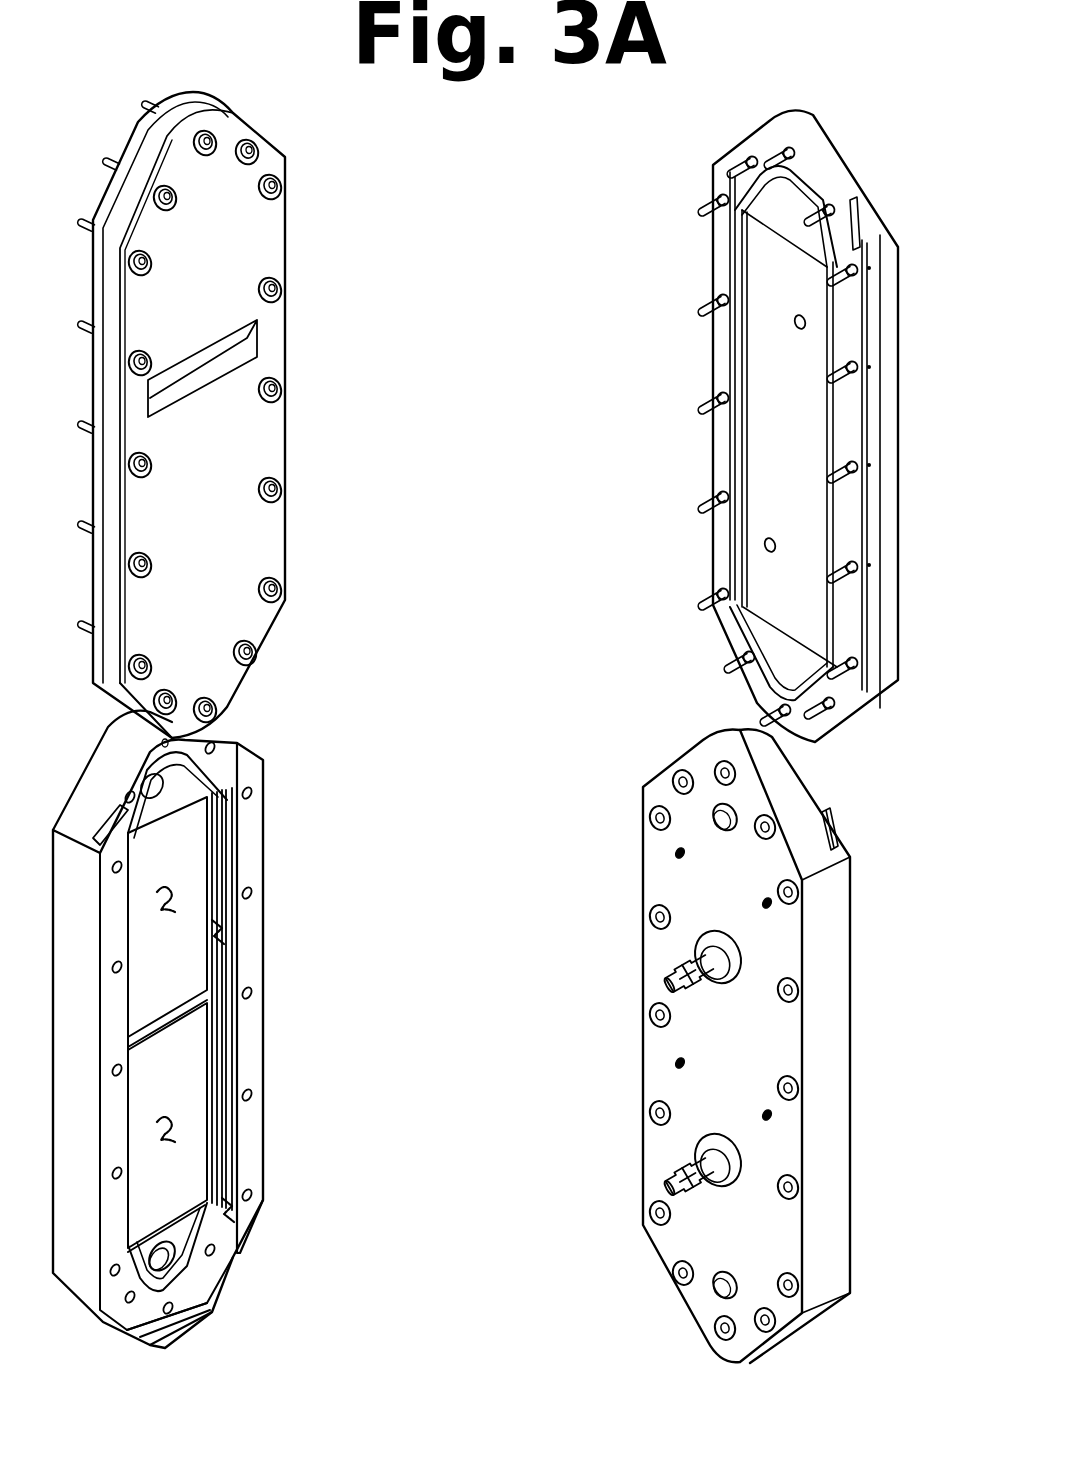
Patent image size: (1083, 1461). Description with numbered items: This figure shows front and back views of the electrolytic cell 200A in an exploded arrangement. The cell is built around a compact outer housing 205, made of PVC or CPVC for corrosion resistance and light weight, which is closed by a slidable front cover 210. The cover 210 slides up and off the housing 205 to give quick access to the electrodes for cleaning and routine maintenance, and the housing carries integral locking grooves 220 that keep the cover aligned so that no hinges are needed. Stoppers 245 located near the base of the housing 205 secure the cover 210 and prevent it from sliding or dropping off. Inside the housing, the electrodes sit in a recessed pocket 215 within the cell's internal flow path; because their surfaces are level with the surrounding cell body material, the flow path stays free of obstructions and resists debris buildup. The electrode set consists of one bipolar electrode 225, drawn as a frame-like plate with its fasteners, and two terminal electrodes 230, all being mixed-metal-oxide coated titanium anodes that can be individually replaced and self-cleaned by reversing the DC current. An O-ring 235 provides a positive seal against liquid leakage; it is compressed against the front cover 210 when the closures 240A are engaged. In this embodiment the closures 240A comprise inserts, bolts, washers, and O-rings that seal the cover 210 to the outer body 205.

The electrolytic cell 200A is at (302, 739).
The housing 205 is at (268, 947).
The slidable front cover 210 is at (290, 500).
The recessed pocket 215 is at (225, 931).
The integral locking grooves 220 is at (252, 1192).
The bipolar electrode 225 is at (760, 343).
The terminal electrodes 230 is at (182, 880).
The O-ring 235 is at (225, 1160).
The closures 240A is at (290, 585).
The stoppers 245 is at (208, 1303).